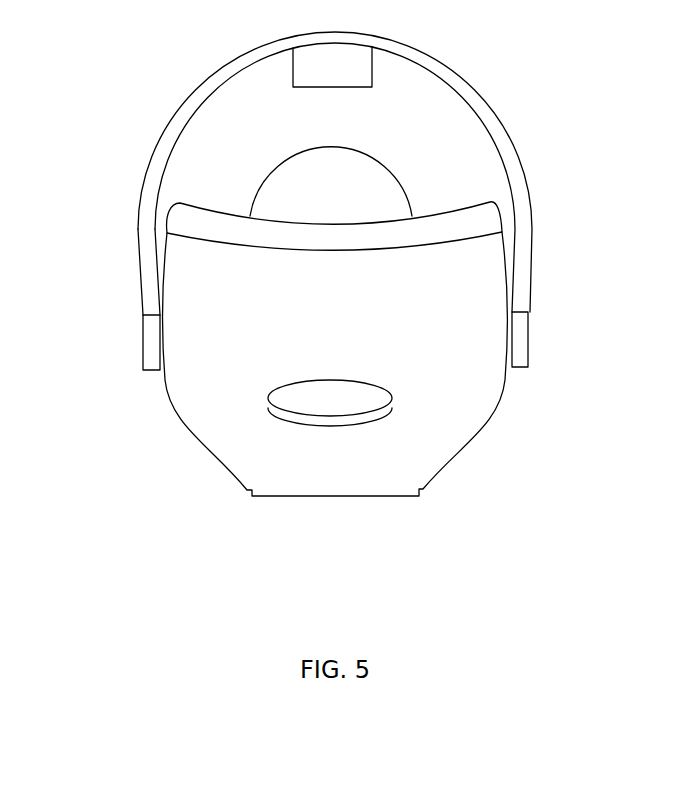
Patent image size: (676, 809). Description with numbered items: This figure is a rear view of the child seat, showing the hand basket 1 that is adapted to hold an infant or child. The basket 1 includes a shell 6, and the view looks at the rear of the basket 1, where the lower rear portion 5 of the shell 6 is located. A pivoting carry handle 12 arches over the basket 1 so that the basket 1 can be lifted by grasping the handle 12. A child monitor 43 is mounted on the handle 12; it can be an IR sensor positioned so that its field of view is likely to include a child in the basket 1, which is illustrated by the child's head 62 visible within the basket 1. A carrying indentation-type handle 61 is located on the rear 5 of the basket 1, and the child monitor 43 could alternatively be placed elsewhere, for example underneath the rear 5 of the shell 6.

The hand basket 1 is at (104, 393).
The lower rear portion 5 is at (502, 337).
The shell 6 is at (455, 445).
The carry handle 12 is at (505, 138).
The child monitor 43 is at (372, 62).
The carrying indentation-type handle 61 is at (347, 380).
The child's head 62 is at (385, 176).